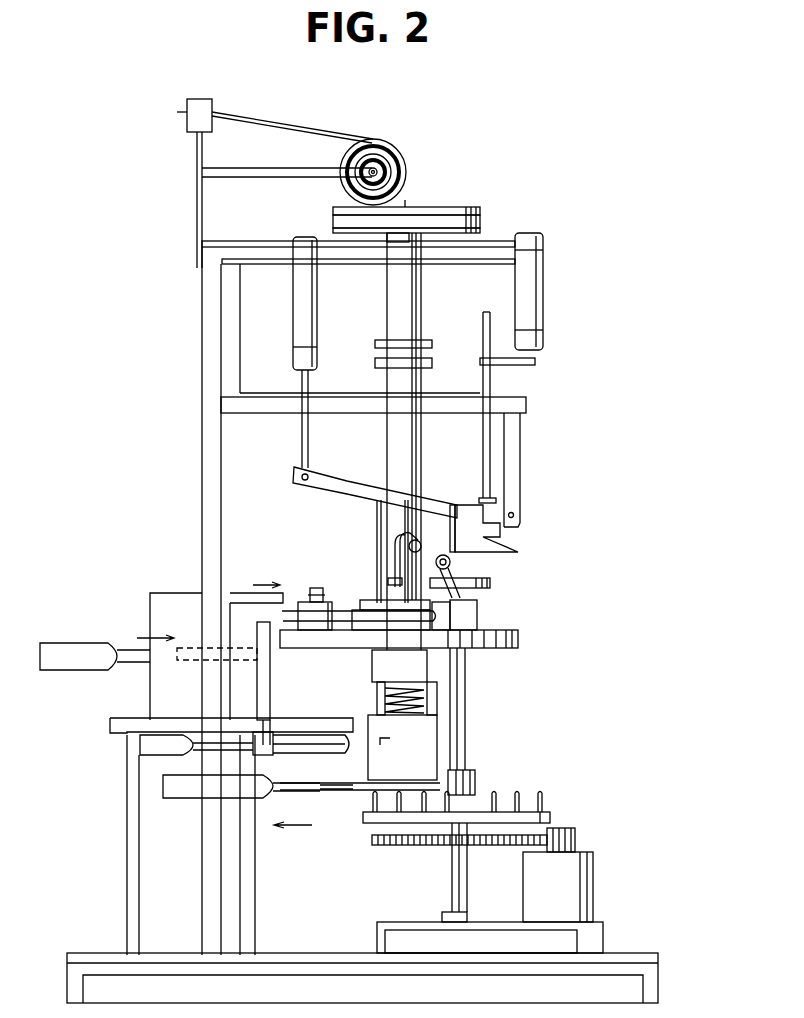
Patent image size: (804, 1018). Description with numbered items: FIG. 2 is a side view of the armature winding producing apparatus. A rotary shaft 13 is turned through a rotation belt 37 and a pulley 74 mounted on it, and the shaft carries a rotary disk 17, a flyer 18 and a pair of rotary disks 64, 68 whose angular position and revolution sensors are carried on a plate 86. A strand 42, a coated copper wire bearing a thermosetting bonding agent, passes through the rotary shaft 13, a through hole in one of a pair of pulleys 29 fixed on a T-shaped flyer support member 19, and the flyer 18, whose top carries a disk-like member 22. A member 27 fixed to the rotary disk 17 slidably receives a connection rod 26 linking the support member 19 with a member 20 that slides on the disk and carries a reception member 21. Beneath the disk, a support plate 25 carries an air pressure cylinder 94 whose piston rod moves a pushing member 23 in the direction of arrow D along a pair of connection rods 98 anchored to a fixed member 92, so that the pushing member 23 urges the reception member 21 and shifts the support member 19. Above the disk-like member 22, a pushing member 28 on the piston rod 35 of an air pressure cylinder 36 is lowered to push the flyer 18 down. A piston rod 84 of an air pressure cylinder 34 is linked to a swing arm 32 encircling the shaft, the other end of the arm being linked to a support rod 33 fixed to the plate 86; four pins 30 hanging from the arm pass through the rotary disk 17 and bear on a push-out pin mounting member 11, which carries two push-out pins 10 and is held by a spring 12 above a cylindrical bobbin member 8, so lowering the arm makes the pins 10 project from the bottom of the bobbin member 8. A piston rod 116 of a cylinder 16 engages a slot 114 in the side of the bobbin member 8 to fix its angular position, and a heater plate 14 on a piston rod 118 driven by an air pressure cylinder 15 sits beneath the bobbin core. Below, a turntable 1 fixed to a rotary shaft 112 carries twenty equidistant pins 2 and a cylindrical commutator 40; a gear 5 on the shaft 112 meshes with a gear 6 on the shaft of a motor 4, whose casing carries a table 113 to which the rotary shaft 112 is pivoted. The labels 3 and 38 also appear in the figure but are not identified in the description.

The turntable 1 is at (551, 818).
The pins 2 is at (542, 800).
The turret shaft 3 is at (468, 830).
The motor 4 is at (594, 895).
The gear 5 is at (410, 846).
The gear 6 is at (576, 838).
The bobbin member 8 is at (368, 766).
The push-out pins 10 is at (378, 692).
The push-out pin mounting member 11 is at (437, 671).
The spring 12 is at (437, 710).
The rotary shaft 13 is at (421, 447).
The heater plate 14 is at (354, 800).
The air pressure cylinder 15 is at (178, 798).
The cylinder 16 is at (140, 745).
The rotary disk 17 is at (520, 637).
The flyer 18 is at (467, 747).
The flyer support member 19 is at (478, 612).
The member 20 is at (283, 585).
The reception member 21 is at (300, 602).
The disk-like member 22 is at (492, 584).
The pushing member 23 is at (170, 593).
The support plate 25 is at (300, 718).
The connection rod 26 is at (327, 603).
The member 27 is at (353, 603).
The pushing member 28 is at (513, 539).
The pulleys 29 is at (452, 563).
The pins 30 is at (462, 506).
The swing arm 32 is at (294, 471).
The support rod 33 is at (521, 477).
The air pressure cylinder 34 is at (318, 306).
The piston rod 35 is at (483, 318).
The air pressure cylinder 36 is at (545, 296).
The rotation belt 37 is at (430, 217).
The pulley 38 is at (398, 148).
The cylindrical commutator 40 is at (477, 782).
The strand 42 is at (318, 121).
The rotary disk 64 is at (432, 362).
The rotary disk 68 is at (375, 360).
The pulley 74 is at (478, 210).
The piston rod 84 is at (309, 444).
The plate 86 is at (518, 395).
The fixed member 92 is at (272, 640).
The air pressure cylinder 94 is at (84, 643).
The connection rods 98 is at (243, 660).
The rotary shaft 112 is at (468, 893).
The table 113 is at (442, 913).
The slot 114 is at (380, 760).
The piston rod 116 is at (320, 753).
The piston rod 118 is at (279, 791).
The arrow D is at (293, 839).